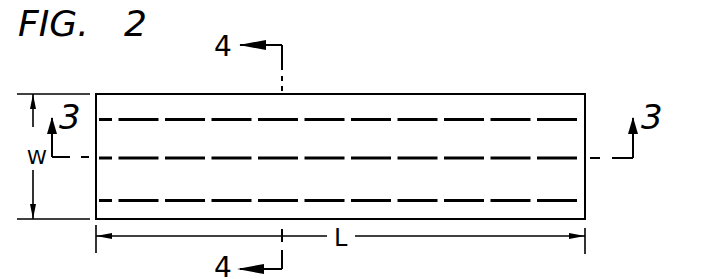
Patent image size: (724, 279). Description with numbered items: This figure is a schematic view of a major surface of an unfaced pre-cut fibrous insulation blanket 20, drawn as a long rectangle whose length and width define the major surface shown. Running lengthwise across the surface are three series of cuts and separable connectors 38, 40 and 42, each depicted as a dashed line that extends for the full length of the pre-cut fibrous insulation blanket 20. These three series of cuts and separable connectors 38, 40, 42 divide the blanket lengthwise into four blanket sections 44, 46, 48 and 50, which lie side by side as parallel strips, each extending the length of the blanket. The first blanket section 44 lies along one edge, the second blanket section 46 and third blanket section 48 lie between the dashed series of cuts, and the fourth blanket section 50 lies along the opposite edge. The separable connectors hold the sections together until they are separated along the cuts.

The pre-cut fibrous insulation blanket 20 is at (623, 74).
The first series of cuts and separable connectors 38 is at (424, 117).
The second series of cuts and separable connectors 40 is at (470, 155).
The third series of cuts and separable connectors 42 is at (516, 196).
The first blanket section 44 is at (324, 108).
The second blanket section 46 is at (324, 140).
The third blanket section 48 is at (324, 181).
The fourth blanket section 50 is at (323, 213).